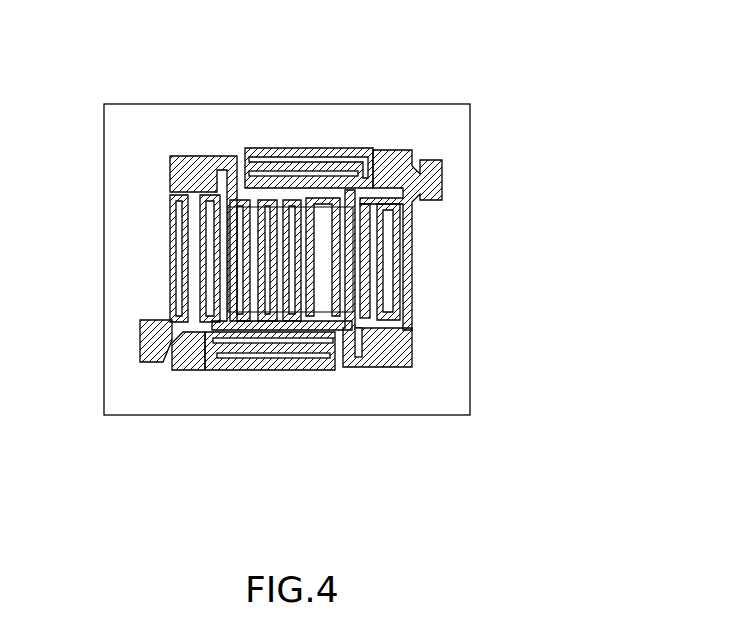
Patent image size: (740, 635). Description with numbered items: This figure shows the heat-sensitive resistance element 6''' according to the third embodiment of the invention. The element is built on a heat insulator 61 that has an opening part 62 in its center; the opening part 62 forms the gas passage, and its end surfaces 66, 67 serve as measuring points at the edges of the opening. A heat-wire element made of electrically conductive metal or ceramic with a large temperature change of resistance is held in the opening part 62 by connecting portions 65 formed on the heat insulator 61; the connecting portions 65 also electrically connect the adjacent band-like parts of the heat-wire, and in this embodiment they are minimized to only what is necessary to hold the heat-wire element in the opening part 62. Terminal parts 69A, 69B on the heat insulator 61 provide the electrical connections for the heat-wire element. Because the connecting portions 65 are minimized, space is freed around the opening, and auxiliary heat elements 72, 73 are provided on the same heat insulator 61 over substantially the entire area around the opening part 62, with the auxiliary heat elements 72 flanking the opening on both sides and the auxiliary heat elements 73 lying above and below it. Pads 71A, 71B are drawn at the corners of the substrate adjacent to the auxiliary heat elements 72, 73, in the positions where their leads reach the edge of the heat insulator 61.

The heat-sensitive resistance element 6''' is at (304, 261).
The heat insulator 61 is at (438, 382).
The opening part 62 is at (352, 276).
The connecting portions 65 is at (257, 190).
The end surface of the opening part 66 is at (289, 207).
The end surface of the opening part 67 is at (317, 336).
The terminal part 69A is at (185, 168).
The terminal part 69B is at (393, 360).
The electrode pad 71A is at (156, 345).
The electrode pad 71B is at (390, 162).
The auxiliary heat element 72 is at (175, 241).
The auxiliary heat element 73 is at (327, 163).